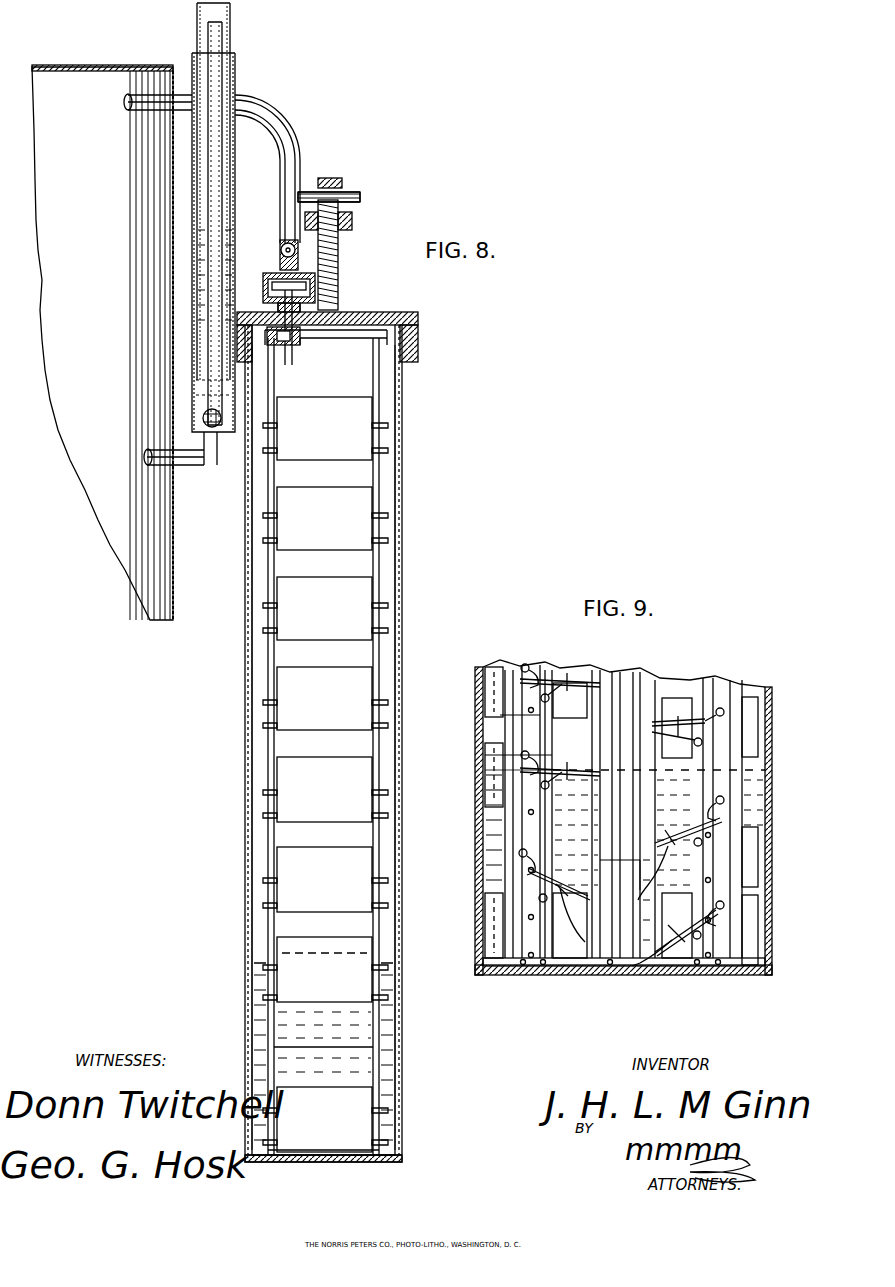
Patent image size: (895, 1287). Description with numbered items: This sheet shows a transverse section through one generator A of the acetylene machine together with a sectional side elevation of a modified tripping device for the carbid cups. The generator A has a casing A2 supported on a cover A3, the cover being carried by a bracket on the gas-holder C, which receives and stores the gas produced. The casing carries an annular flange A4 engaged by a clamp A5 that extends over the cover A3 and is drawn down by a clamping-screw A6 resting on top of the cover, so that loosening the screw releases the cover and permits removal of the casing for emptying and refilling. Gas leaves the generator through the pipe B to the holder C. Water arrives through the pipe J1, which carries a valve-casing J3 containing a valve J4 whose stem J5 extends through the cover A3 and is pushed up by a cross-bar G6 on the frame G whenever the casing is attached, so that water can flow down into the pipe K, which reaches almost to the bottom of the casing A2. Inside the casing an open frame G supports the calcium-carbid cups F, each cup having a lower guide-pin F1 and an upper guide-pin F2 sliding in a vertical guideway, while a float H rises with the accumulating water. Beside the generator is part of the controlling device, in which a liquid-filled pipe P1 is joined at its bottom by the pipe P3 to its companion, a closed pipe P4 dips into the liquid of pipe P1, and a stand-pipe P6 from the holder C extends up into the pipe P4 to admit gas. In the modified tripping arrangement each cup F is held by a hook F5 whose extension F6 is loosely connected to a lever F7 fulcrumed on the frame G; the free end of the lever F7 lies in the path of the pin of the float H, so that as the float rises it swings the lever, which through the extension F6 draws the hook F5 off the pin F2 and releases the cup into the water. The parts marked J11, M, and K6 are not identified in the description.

In FIG. 8, the gas-holder C is at (102, 342).
In FIG. 8, the pipe P4 is at (233, 33).
In FIG. 8, the stand-pipe P6 is at (215, 80).
In FIG. 8, the pipe P1 is at (228, 190).
In FIG. 8, the pipe P3 is at (222, 440).
In FIG. 8, the pipe B is at (283, 122).
In FIG. 8, the pipe J1 is at (280, 250).
In FIG. 8, the valve-casing J3 is at (262, 277).
In FIG. 8, the valve J4 is at (263, 292).
In FIG. 8, the stem J5 is at (315, 345).
In FIG. 8, the screw head J11 is at (330, 178).
In FIG. 8, the clamp A5 is at (352, 222).
In FIG. 8, the clamping-screw A6 is at (338, 262).
In FIG. 8, the cover A3 is at (392, 318).
In FIG. 8, the annular flange A4 is at (418, 356).
In FIG. 8, the pipe K is at (285, 347).
In FIG. 9, the pipe K is at (497, 727).
In FIG. 8, the cross-bar G6 is at (322, 340).
In FIG. 8, the generator A is at (337, 743).
In FIG. 8, the casing A2 is at (246, 676).
In FIG. 9, the casing A2 is at (580, 972).
In FIG. 8, the frame G is at (382, 500).
In FIG. 9, the frame G is at (600, 972).
In FIG. 8, the cup F is at (388, 452).
In FIG. 9, the cup F is at (750, 700).
In FIG. 8, the guide-pin F1 is at (268, 728).
In FIG. 8, the guide-pin F2 is at (388, 425).
In FIG. 9, the guide-pin F2 is at (525, 768).
In FIG. 9, the hook F5 is at (535, 760).
In FIG. 9, the extension F6 is at (660, 700).
In FIG. 9, the lever F7 is at (622, 818).
In FIG. 9, the connector M is at (659, 848).
In FIG. 9, the float H is at (625, 845).
In FIG. 9, the lower lever K6 is at (678, 931).